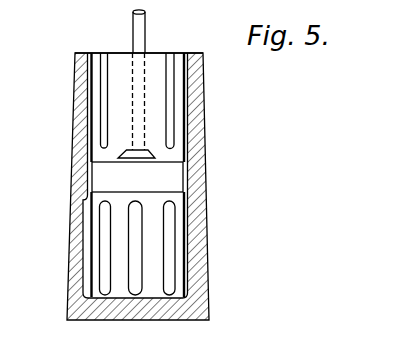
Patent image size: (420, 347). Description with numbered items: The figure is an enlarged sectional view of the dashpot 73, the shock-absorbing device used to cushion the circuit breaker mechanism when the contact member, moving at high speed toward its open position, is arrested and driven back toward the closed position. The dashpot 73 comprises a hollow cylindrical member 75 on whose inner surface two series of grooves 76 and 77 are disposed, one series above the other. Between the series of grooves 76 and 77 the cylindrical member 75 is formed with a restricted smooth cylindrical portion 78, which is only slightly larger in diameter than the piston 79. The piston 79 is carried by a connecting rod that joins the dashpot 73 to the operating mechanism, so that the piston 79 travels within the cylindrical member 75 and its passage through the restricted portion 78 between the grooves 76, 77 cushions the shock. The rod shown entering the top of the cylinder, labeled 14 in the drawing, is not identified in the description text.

The piston rod 14 is at (146, 49).
The dashpot 73 is at (247, 145).
The hollow cylindrical member 75 is at (207, 249).
The grooves 76 is at (102, 56).
The grooves 77 is at (174, 282).
The restricted smooth cylindrical portion 78 is at (183, 170).
The piston 79 is at (137, 177).